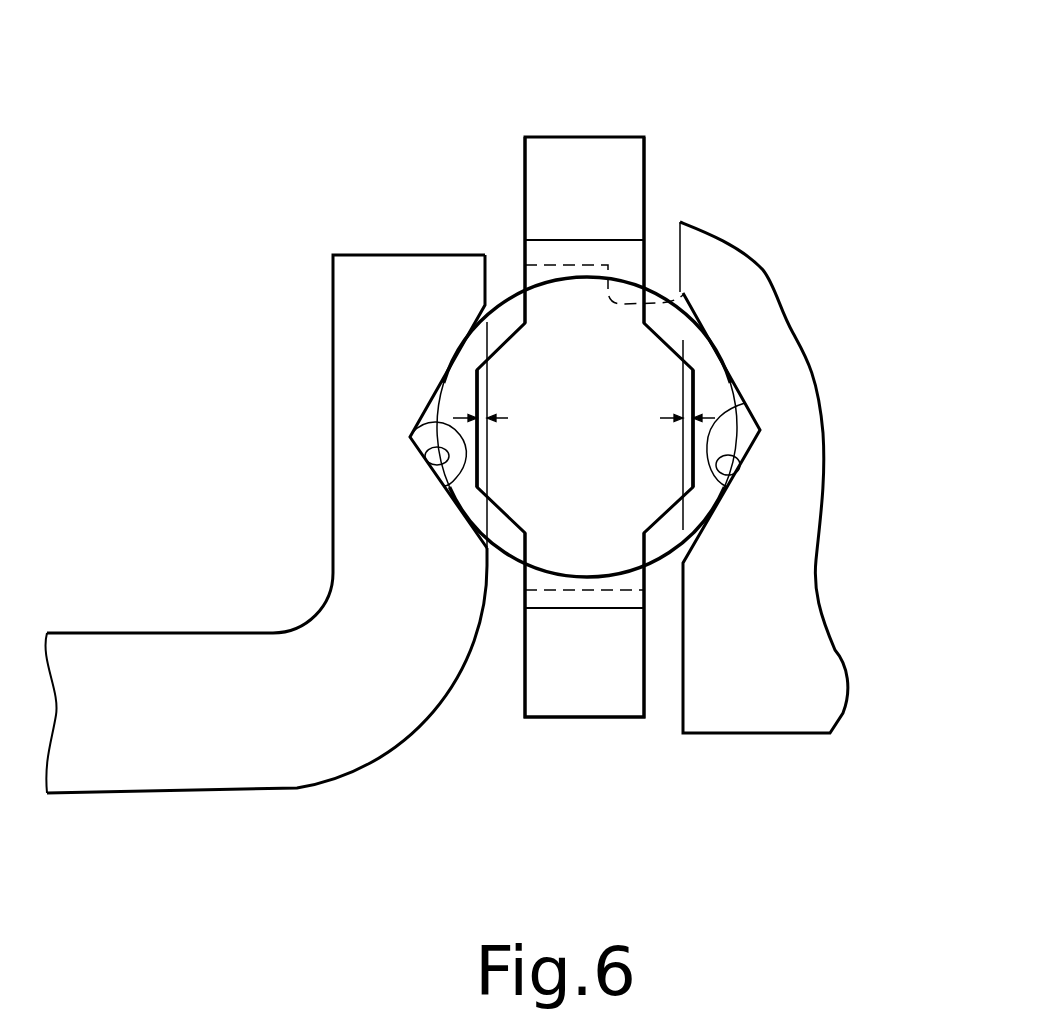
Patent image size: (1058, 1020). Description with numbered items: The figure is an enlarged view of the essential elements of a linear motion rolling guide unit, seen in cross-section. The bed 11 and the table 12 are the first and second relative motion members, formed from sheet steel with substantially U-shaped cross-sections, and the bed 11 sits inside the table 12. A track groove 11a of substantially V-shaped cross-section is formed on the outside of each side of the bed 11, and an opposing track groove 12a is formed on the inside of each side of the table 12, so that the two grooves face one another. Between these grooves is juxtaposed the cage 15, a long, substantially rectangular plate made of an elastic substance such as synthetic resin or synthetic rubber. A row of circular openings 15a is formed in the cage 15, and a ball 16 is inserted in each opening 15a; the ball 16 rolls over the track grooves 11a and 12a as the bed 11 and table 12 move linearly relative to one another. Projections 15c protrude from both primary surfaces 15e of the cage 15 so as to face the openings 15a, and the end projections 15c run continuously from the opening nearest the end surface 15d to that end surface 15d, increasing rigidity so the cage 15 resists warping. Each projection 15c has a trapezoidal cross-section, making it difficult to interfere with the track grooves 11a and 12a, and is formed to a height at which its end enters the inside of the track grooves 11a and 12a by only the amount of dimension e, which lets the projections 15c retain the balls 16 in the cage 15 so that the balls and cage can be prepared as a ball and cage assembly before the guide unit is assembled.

The bed 11 is at (244, 762).
The track groove 11a is at (440, 482).
The table 12 is at (769, 706).
The track groove 12a is at (723, 483).
The cage 15 is at (646, 120).
The circular opening 15a is at (683, 295).
The projection 15c is at (667, 390).
The end surface 15d is at (593, 655).
The primary surface 15e is at (645, 178).
The ball 16 is at (693, 337).
The dimension e is at (584, 437).